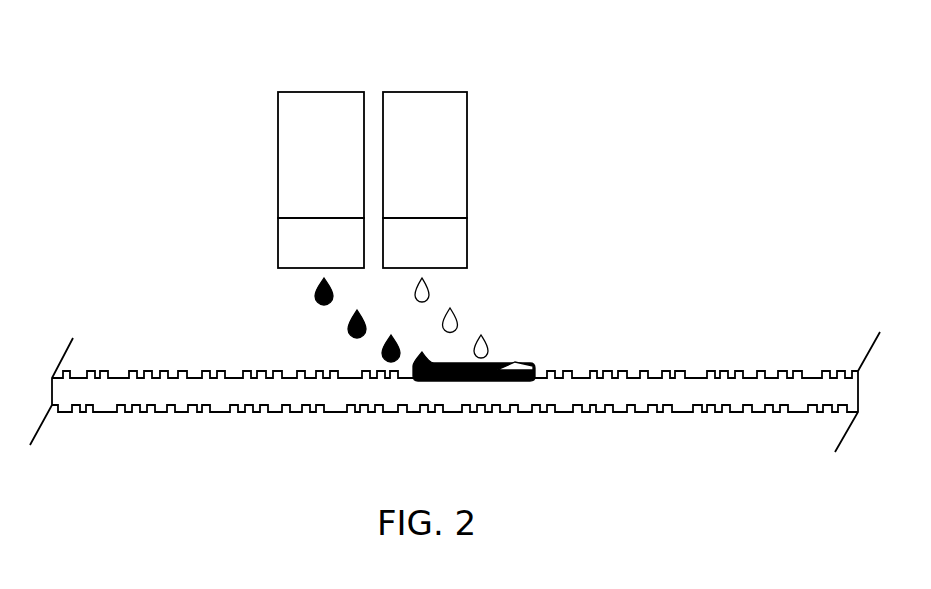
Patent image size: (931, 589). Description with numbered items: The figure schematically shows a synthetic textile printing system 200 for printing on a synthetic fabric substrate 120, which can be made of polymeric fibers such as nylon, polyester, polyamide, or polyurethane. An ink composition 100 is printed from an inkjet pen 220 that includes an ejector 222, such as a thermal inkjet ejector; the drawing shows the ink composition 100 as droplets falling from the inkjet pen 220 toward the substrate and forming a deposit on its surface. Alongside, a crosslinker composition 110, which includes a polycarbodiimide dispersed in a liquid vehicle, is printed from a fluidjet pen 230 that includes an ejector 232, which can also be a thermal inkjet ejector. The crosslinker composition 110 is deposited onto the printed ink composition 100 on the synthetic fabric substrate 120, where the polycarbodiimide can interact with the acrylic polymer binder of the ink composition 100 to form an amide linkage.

The synthetic textile printing system 200 is at (155, 78).
The inkjet pen 220 is at (300, 172).
The ejector 222 is at (300, 253).
The fluidjet pen 230 is at (404, 172).
The ejector 232 is at (404, 253).
The ink composition 100 is at (316, 294).
The crosslinker composition 110 is at (458, 323).
The synthetic fabric substrate 120 is at (638, 392).